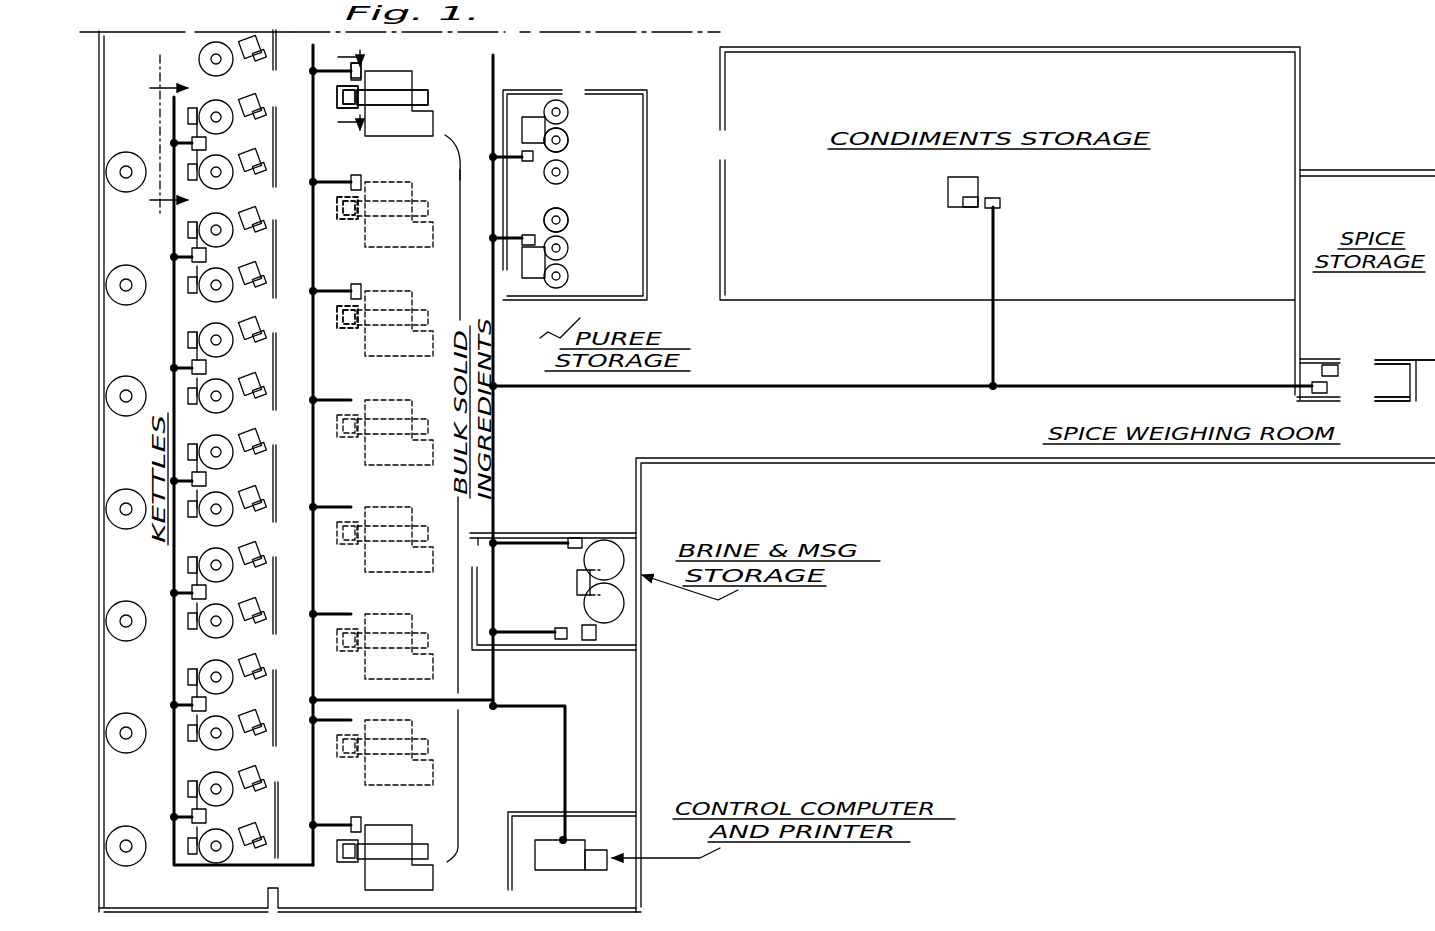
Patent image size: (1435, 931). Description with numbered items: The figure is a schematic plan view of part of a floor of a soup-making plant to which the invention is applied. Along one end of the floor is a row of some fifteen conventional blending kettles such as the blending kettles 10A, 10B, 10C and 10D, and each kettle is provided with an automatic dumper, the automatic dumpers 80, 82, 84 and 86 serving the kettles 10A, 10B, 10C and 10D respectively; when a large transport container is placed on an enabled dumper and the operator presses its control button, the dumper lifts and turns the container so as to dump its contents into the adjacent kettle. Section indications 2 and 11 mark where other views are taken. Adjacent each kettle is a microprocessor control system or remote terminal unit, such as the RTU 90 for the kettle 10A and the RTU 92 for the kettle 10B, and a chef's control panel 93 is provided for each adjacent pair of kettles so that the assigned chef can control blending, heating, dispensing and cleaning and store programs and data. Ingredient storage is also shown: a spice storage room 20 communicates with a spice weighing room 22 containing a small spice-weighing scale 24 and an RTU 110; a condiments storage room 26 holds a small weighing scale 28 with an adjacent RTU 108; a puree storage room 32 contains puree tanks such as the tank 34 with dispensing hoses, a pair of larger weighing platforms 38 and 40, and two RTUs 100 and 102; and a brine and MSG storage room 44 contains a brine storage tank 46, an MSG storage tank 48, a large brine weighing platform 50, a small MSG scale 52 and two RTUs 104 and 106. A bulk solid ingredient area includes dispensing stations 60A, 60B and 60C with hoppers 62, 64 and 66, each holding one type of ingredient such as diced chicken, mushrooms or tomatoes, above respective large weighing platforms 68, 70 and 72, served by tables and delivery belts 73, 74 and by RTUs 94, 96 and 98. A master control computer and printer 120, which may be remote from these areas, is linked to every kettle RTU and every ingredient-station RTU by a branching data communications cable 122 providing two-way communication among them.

The section line 2 is at (362, 90).
The blending kettle 10A is at (232, 72).
The blending kettle 10B is at (252, 118).
The blending kettle 10C is at (252, 167).
The blending kettle 10D is at (252, 231).
The section line 11 is at (154, 140).
The spice storage room 20 is at (1380, 299).
The spice weighing room 22 is at (1343, 388).
The spice-weighing scale 24 is at (1330, 365).
The condiments storage room 26 is at (1158, 186).
The weighing scale 28 is at (948, 190).
The puree storage room 32 is at (605, 196).
The puree tank 34 is at (585, 128).
The weighing platform 38 is at (530, 125).
The weighing platform 40 is at (530, 278).
The brine and MSG storage room 44 is at (552, 587).
The brine storage tank 46 is at (600, 552).
The MSG storage tank 48 is at (614, 612).
The weighing platform 50 is at (577, 588).
The scale 52 is at (592, 642).
The bulk product dispensing station 60A is at (374, 98).
The bulk product dispensing station 60B is at (373, 213).
The bulk product dispensing station 60C is at (364, 320).
The bulk solid ingredient-dispensing hopper 62 is at (352, 120).
The bulk solid ingredient-dispensing hopper 64 is at (352, 230).
The bulk solid ingredient-dispensing hopper 66 is at (355, 338).
The weighing platform 68 is at (337, 94).
The weighing platform 70 is at (337, 205).
The weighing platform 72 is at (337, 317).
The table and delivery belt 73 is at (440, 148).
The delivery belt 74 is at (410, 98).
The automatic dumper 80 is at (258, 112).
The automatic dumper 82 is at (258, 160).
The automatic dumper 84 is at (258, 228).
The automatic dumper 86 is at (258, 274).
The remote terminal unit 90 is at (178, 106).
The remote terminal unit 92 is at (188, 172).
The chef's control panel 93 is at (197, 135).
The remote terminal unit 94 is at (358, 68).
The remote terminal unit 96 is at (358, 180).
The remote terminal unit 98 is at (360, 290).
The remote terminal unit 100 is at (528, 160).
The remote terminal unit 102 is at (528, 235).
The remote terminal unit 104 is at (575, 538).
The remote terminal unit 106 is at (560, 640).
The remote terminal unit 108 is at (1000, 203).
The remote terminal unit 110 is at (1315, 393).
The master control computer and printer 120 is at (555, 870).
The data communications cable 122 is at (742, 388).